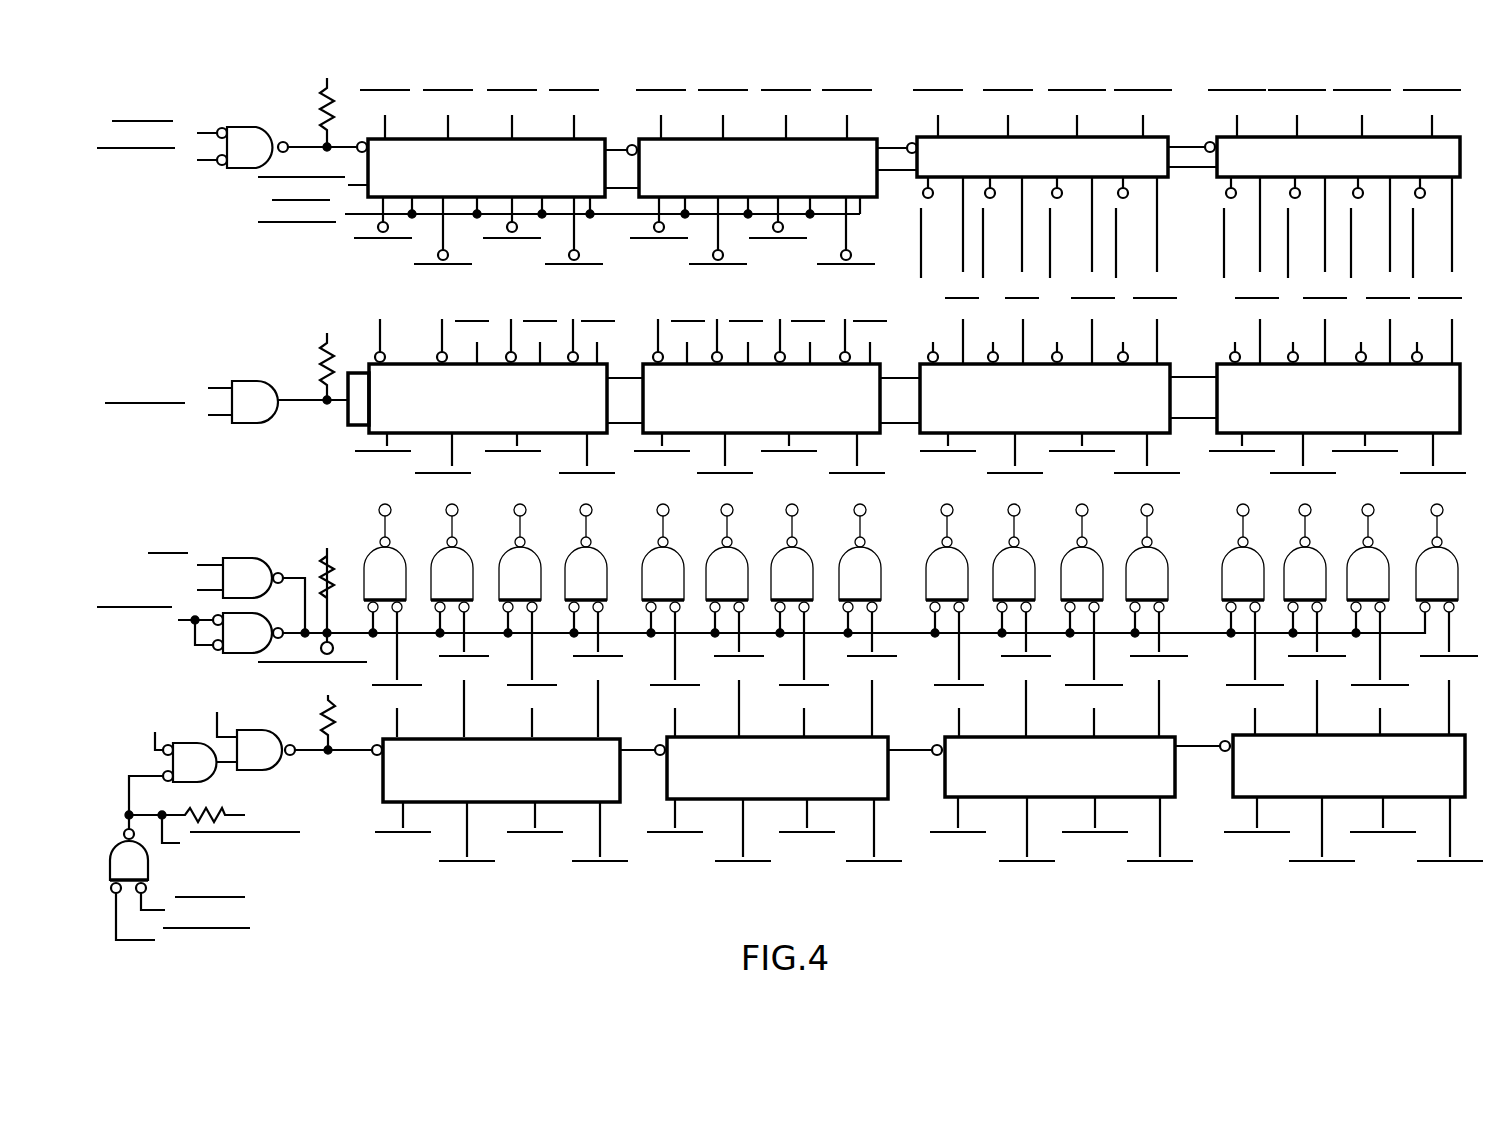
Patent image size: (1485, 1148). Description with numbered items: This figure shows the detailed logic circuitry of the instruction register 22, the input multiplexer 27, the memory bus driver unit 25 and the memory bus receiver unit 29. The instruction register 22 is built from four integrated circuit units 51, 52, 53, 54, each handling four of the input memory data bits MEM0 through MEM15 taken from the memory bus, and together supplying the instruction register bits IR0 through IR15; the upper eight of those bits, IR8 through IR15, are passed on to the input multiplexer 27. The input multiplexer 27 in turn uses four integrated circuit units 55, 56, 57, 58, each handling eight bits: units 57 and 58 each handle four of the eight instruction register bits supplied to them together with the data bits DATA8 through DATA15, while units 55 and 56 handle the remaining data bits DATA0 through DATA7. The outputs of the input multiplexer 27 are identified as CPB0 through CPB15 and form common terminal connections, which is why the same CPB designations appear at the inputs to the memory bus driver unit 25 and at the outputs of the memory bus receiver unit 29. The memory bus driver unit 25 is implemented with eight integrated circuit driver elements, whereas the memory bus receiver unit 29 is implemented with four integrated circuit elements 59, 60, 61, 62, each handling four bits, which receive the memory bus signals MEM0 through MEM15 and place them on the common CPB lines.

The input multiplexer 27 is at (208, 212).
The instruction register 22 is at (285, 354).
The memory bus driver unit 25 is at (294, 534).
The memory bus receiver unit 29 is at (511, 901).
The integrated circuit unit 51 is at (474, 410).
The integrated circuit unit 52 is at (740, 410).
The integrated circuit unit 53 is at (1032, 410).
The integrated circuit unit 54 is at (1319, 408).
The integrated circuit unit 55 is at (473, 180).
The integrated circuit unit 56 is at (743, 180).
The integrated circuit unit 57 is at (1026, 170).
The integrated circuit unit 58 is at (1324, 170).
The integrated circuit element 59 is at (490, 783).
The integrated circuit element 60 is at (764, 781).
The integrated circuit element 61 is at (1042, 780).
The integrated circuit element 62 is at (1324, 779).